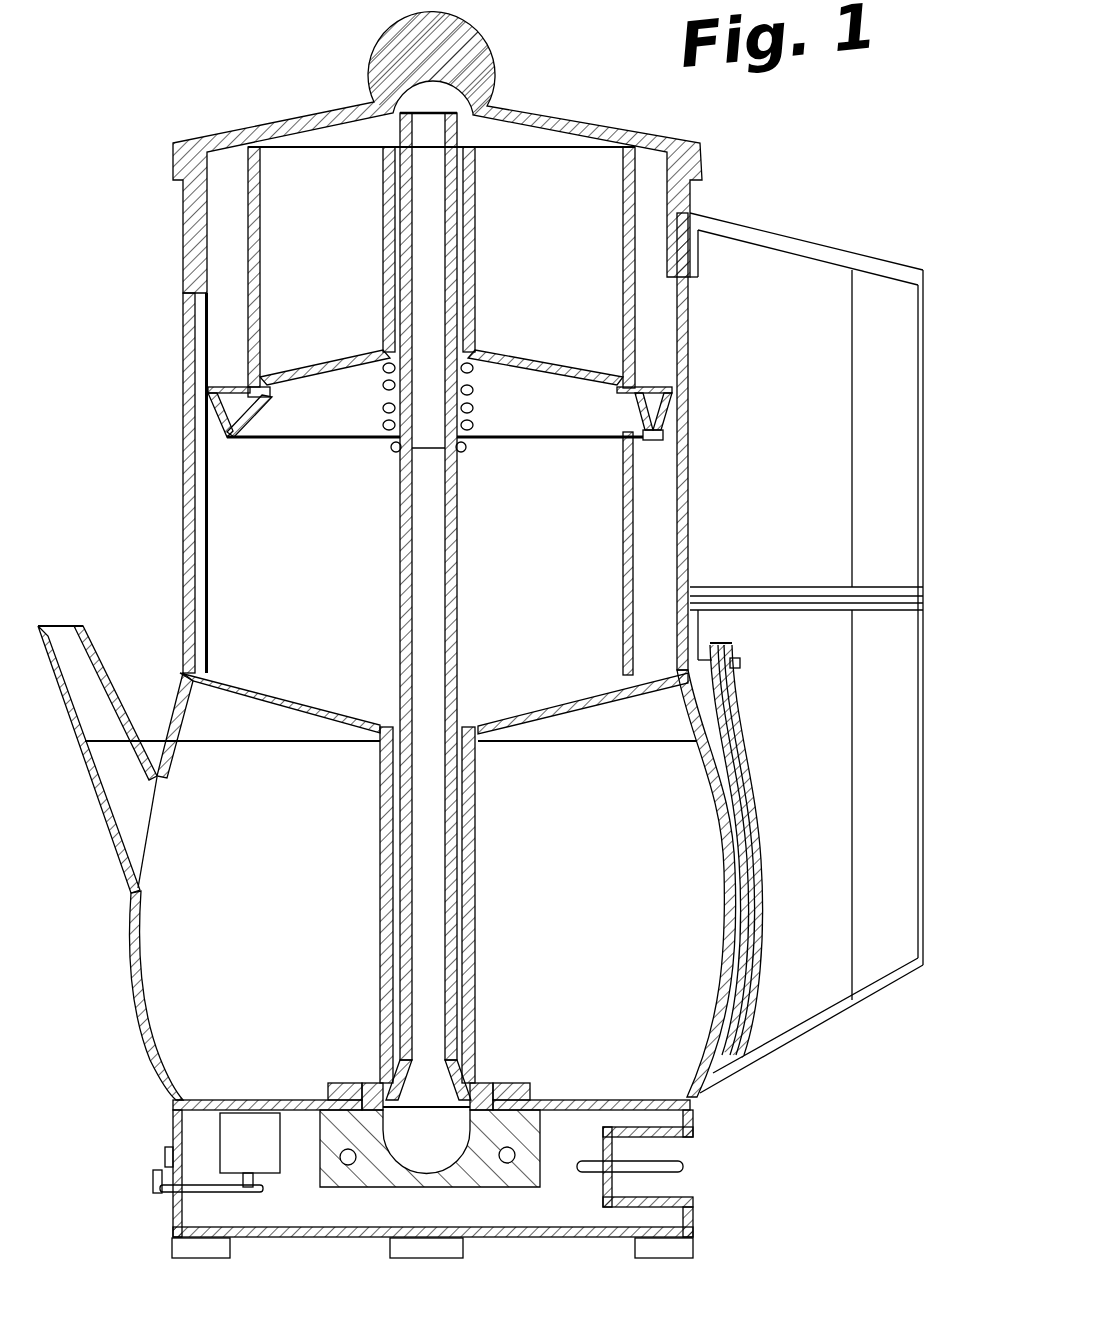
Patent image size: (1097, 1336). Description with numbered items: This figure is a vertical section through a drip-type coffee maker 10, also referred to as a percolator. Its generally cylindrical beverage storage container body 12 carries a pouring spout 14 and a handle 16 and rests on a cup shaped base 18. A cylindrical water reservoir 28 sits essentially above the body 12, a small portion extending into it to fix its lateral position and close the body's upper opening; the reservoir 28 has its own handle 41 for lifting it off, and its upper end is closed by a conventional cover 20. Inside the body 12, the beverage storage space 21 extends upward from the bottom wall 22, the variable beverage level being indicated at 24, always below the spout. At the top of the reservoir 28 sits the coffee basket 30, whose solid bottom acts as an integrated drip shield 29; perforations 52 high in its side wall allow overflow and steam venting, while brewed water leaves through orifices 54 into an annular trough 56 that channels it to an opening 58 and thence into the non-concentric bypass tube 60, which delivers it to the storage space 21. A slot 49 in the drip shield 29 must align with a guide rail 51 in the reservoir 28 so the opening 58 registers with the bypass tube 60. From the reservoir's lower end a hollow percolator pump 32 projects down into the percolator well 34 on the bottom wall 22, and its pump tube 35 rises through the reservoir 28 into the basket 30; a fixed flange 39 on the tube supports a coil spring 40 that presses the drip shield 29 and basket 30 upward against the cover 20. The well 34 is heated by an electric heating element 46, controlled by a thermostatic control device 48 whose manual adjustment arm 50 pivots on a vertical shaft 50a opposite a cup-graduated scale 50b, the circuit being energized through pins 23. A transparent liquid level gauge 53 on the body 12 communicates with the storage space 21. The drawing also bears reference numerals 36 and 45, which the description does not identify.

The drip-type coffee maker 10 is at (842, 140).
The beverage storage container body 12 is at (130, 1021).
The pouring spout 14 is at (95, 789).
The handle 16 is at (912, 992).
The cup shaped base 18 is at (165, 1114).
The cover 20 is at (565, 117).
The beverage storage space 21 is at (250, 910).
The bottom wall 22 is at (205, 1098).
The pins 23 is at (685, 1165).
The level 24 is at (246, 728).
The water reservoir 28 is at (183, 541).
The drip shield 29 is at (316, 440).
The coffee basket 30 is at (262, 287).
The percolator pump 32 is at (452, 1090).
The percolator well 34 is at (412, 1180).
The pump tube 35 is at (459, 586).
The pump valve 36 is at (410, 1048).
The fixed flange 39 is at (463, 452).
The coil spring 40 is at (474, 390).
The handle 41 is at (847, 255).
The sloping wall 45 is at (541, 704).
The electric heating element 46 is at (507, 1164).
The control device 48 is at (282, 1178).
The slot 49 is at (214, 424).
The manual adjustment arm 50 is at (152, 1183).
The vertical shaft 50a is at (258, 1193).
The scale 50b is at (163, 1152).
The guide rail 51 is at (208, 540).
The perforations 52 is at (258, 152).
The transparent liquid level gauge 53 is at (765, 978).
The orifices 54 is at (262, 362).
The annular trough 56 is at (220, 390).
The opening 58 is at (668, 412).
The non-concentric bypass tube 60 is at (623, 481).